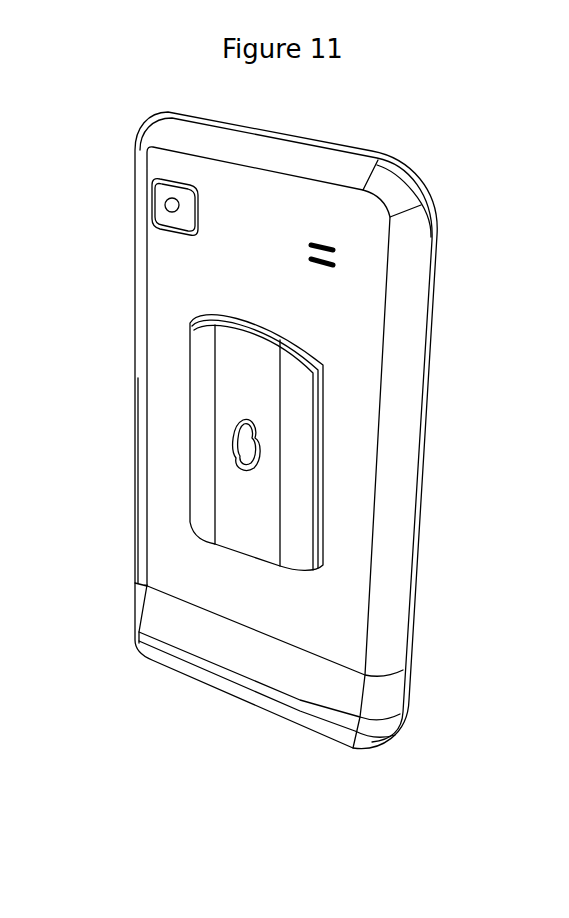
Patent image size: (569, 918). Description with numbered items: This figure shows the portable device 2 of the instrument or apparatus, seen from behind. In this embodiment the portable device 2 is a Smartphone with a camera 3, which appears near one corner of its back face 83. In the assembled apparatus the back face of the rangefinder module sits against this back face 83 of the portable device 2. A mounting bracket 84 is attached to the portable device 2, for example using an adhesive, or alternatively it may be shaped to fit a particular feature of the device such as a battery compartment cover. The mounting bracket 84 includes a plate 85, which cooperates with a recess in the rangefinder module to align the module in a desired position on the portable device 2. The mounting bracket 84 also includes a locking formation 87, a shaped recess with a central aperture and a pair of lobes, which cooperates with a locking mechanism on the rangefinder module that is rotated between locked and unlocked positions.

The portable device 2 is at (488, 124).
The camera 3 is at (173, 187).
The back face 83 is at (353, 585).
The mounting bracket 84 is at (302, 470).
The plate 85 is at (295, 405).
The locking formation 87 is at (250, 443).